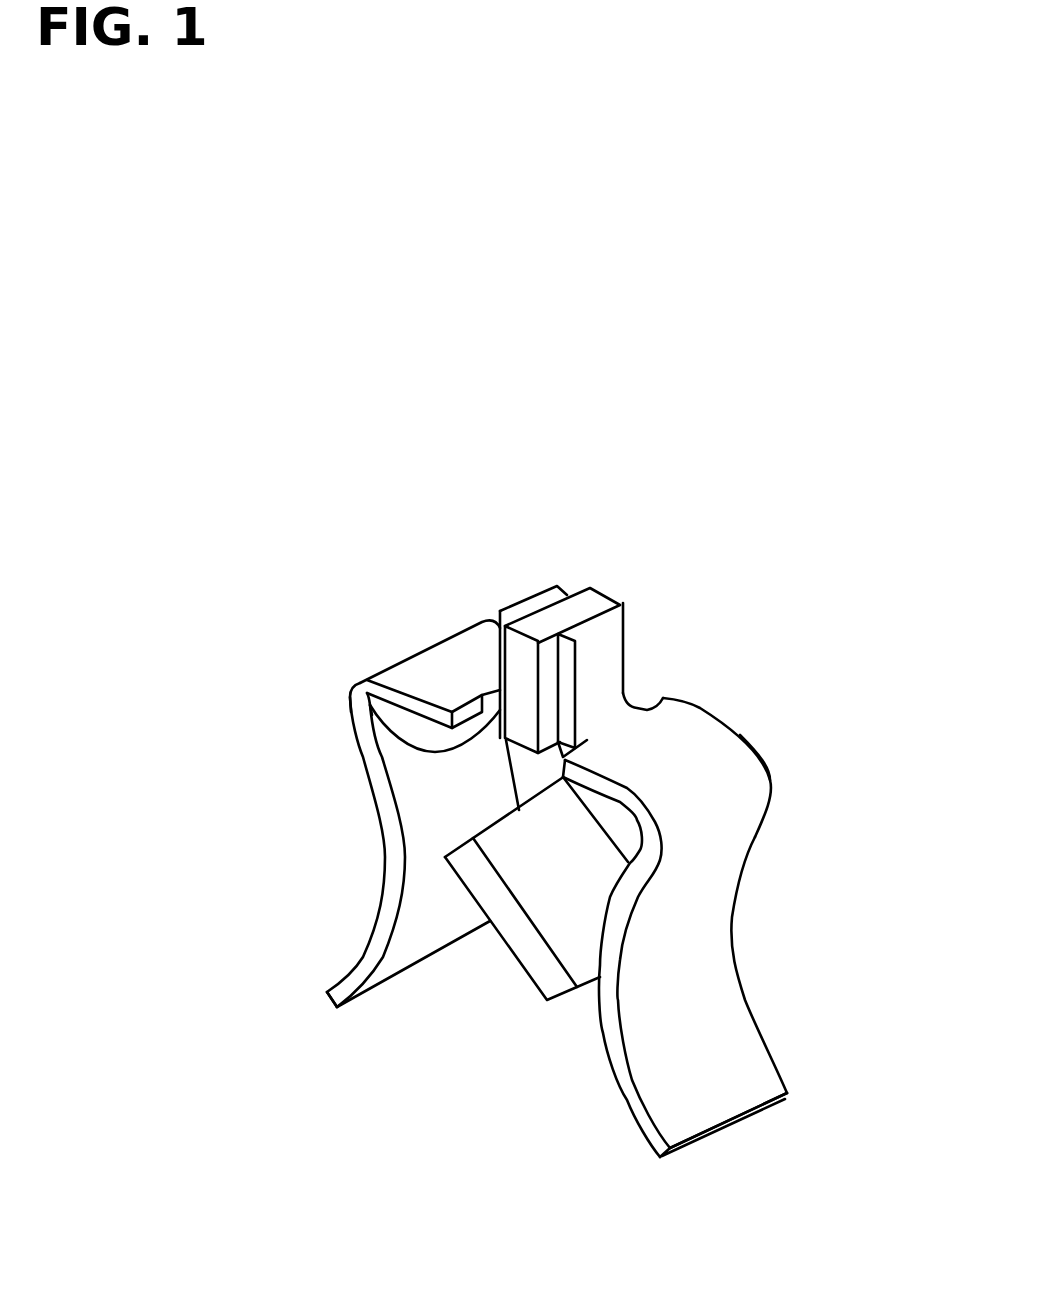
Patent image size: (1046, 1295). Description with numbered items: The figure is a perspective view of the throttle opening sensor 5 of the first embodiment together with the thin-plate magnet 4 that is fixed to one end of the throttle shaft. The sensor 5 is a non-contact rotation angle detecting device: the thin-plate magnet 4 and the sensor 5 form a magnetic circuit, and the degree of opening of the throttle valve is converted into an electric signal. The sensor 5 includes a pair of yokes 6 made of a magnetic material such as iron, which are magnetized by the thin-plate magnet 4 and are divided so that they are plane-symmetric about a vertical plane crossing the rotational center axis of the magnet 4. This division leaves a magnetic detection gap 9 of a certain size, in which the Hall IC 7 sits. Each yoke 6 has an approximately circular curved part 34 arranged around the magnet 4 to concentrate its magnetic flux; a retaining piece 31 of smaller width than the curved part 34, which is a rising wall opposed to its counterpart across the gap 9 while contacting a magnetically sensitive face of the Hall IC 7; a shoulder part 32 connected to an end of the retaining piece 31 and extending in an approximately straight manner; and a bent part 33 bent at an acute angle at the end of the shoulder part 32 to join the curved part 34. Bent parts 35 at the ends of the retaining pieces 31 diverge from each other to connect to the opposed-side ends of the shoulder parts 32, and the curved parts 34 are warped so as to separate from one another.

The thin-plate magnet 4 is at (530, 953).
The throttle opening sensor 5 is at (560, 820).
The yokes 6 is at (328, 995).
The Hall IC 7 is at (605, 592).
The magnetic detection gap 9 is at (584, 528).
The retaining piece 31 is at (530, 612).
The shoulder part 32 is at (417, 677).
The bent part 33 is at (350, 690).
The curved part 34 is at (383, 863).
The bent parts 35 is at (440, 750).